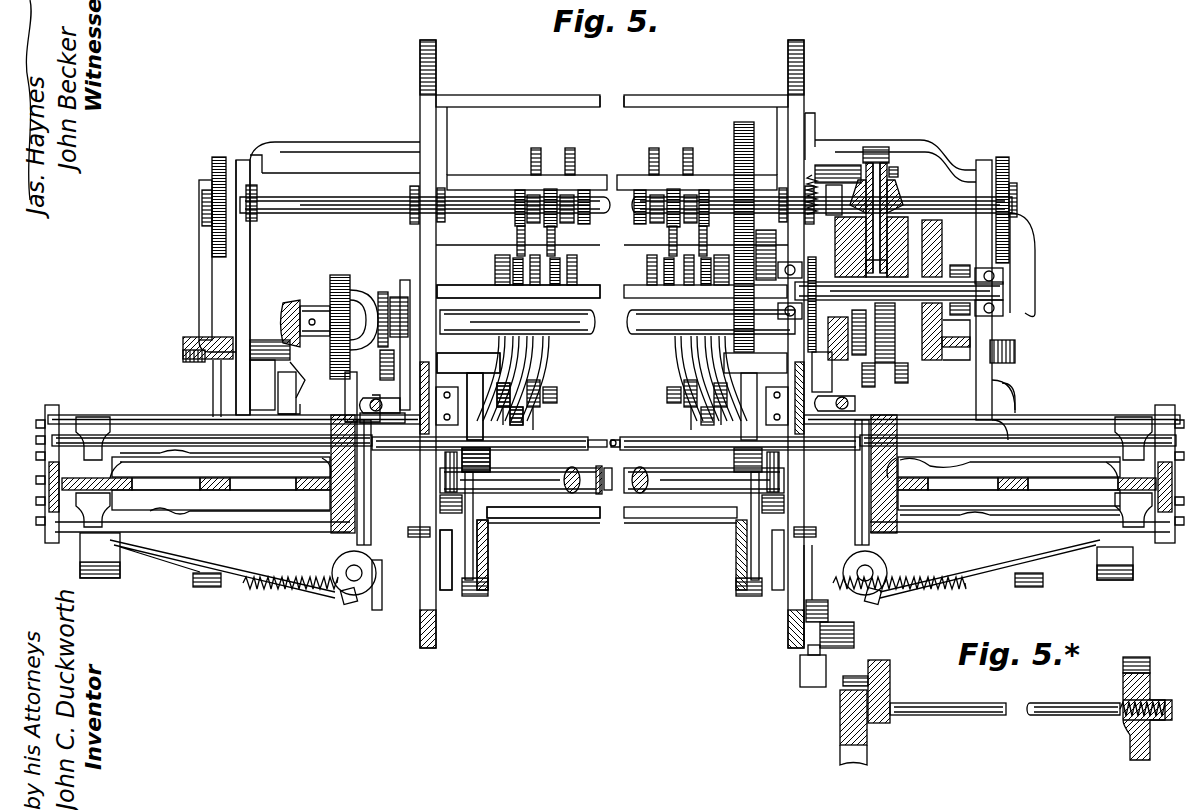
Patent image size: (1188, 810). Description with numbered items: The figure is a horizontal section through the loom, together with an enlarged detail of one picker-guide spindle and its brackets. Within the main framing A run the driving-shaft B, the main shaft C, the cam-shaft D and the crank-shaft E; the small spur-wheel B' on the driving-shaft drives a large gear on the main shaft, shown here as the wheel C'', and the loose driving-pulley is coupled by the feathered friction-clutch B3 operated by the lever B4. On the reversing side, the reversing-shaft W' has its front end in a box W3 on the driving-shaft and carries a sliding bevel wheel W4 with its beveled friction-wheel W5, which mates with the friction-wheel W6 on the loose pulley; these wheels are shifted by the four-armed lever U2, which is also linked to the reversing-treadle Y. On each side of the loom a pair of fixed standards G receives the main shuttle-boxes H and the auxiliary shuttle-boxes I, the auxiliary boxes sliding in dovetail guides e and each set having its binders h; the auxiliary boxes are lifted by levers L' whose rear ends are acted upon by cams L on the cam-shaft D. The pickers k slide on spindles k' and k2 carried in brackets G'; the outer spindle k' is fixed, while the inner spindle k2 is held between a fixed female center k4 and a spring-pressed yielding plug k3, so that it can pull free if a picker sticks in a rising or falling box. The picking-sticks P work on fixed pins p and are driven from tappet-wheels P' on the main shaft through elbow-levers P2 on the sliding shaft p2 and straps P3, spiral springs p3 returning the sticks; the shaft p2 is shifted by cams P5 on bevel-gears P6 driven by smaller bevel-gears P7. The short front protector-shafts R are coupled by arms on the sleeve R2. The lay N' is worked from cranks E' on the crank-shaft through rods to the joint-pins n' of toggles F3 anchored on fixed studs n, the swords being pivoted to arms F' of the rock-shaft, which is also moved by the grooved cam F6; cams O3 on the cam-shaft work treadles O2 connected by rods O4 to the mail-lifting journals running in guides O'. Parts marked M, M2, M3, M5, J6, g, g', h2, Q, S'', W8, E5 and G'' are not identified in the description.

In FIG. 5, the cam-shaft D is at (626, 196).
In FIG. 5, the main shaft C is at (617, 322).
In FIG. 5, the spur-wheel C'' is at (755, 237).
In FIG. 5, the sleeve or hollow shaft R2 is at (616, 435).
In FIG. 5, the crank-shaft E is at (612, 473).
In FIG. 5, the cranks E' is at (602, 508).
In FIG. 5, the arms of the rock-shaft F' is at (612, 474).
In FIG. 5, the cams O3 is at (610, 154).
In FIG. 5, the treadles O2 is at (612, 378).
In FIG. 5, the upright fixed guides O' is at (507, 388).
In FIG. 5, the rods O4 is at (542, 398).
In FIG. 5, the fixed studs n is at (590, 353).
In FIG. 5, the joint-pins n' is at (590, 459).
In FIG. 5, the toggle-connection F3 is at (609, 406).
In FIG. 5, the independent lay N' is at (602, 555).
In FIG. 5, the grooved cam F6 is at (447, 560).
In FIG. 5, the main framing A is at (600, 271).
In FIG. 5, the cams L is at (611, 200).
In FIG. 5, the levers L' is at (602, 300).
In FIG. 5, the bevel-gear P6 is at (201, 340).
In FIG. 5, the cam P5 is at (608, 351).
In FIG. 5, the bevel-gear P7 is at (301, 317).
In FIG. 5, the tappet-wheel P' is at (350, 318).
In FIG. 5, the gear M5 is at (379, 312).
In FIG. 5, the gear M2 is at (402, 309).
In FIG. 5, the bar M is at (396, 345).
In FIG. 5, the elbow-lever P2 is at (620, 377).
In FIG. 5, the strap P3 is at (284, 388).
In FIG. 5, the bracket J6 is at (608, 395).
In FIG. 5, the bar M3 is at (602, 390).
In FIG. 5, the outer spindle k' is at (614, 413).
In FIG. 5, the inner spindle k2 is at (614, 434).
The inner spindle k2 is at (1071, 700).
In FIG. 5, the fixed standards G is at (611, 474).
The fixed standards G is at (847, 720).
In FIG. 5, the picker k is at (614, 472).
In FIG. 5, the main shuttle-boxes H is at (616, 484).
In FIG. 5, the auxiliary shuttle-boxes I is at (616, 483).
In FIG. 5, the dovetail guides e is at (609, 483).
In FIG. 5, the spring g is at (613, 467).
In FIG. 5, the spring g' is at (614, 467).
In FIG. 5, the binders h is at (620, 487).
In FIG. 5, the rod h2 is at (635, 488).
In FIG. 5, the bracket G' is at (614, 474).
The bracket G' is at (885, 684).
In FIG. 5, the rail Q is at (613, 482).
In FIG. 5, the picking-stick P is at (606, 556).
In FIG. 5, the fixed pin p is at (605, 570).
In FIG. 5, the spiral spring p3 is at (604, 591).
In FIG. 5, the short protector-shaft R is at (609, 574).
In FIG. 5, the short shaft p2 is at (379, 585).
In FIG. 5, the block S'' is at (839, 624).
In FIG. 5, the reversing-treadle Y is at (813, 666).
In FIG. 5, the four-armed lever U2 is at (838, 166).
In FIG. 5, the reversing-shaft W' is at (876, 142).
In FIG. 5, the box W3 is at (876, 211).
In FIG. 5, the beveled friction-wheel W6 is at (902, 169).
In FIG. 5, the bevel-toothed wheel W4 is at (883, 196).
In FIG. 5, the beveled friction-wheel W5 is at (873, 247).
In FIG. 5, the housing W8 is at (889, 264).
In FIG. 5, the friction-clutch B3 is at (943, 290).
In FIG. 5, the lever B4 is at (960, 283).
In FIG. 5, the driving-shaft B is at (899, 291).
In FIG. 5, the small spur-wheel B' is at (881, 290).
In FIG. 5, the plate E5 is at (956, 350).
The block G'' is at (1148, 708).
The fixed female center k4 is at (893, 705).
The yielding center plug k3 is at (1122, 705).